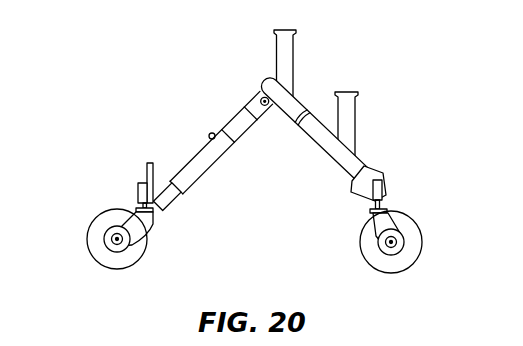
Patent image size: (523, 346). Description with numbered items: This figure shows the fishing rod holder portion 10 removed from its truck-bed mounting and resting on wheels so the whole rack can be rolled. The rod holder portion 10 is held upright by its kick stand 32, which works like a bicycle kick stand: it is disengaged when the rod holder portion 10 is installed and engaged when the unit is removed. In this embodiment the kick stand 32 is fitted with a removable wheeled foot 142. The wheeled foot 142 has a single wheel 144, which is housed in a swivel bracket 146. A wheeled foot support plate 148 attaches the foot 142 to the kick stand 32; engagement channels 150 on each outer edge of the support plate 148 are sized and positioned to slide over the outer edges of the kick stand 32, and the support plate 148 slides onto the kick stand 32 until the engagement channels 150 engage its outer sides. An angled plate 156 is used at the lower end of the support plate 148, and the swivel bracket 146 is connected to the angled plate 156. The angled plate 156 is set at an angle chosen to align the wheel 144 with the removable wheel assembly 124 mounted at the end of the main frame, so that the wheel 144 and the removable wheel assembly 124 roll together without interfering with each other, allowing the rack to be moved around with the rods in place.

The rod holder portion 10 is at (316, 101).
The kick stand 32 is at (238, 116).
The removable wheel assembly 124 is at (404, 198).
The removable wheeled foot 142 is at (213, 188).
The wheel 144 is at (88, 236).
The swivel bracket 146 is at (153, 222).
The wheeled foot support plate 148 is at (205, 147).
The engagement channels 150 is at (224, 156).
The angled plate 156 is at (147, 172).